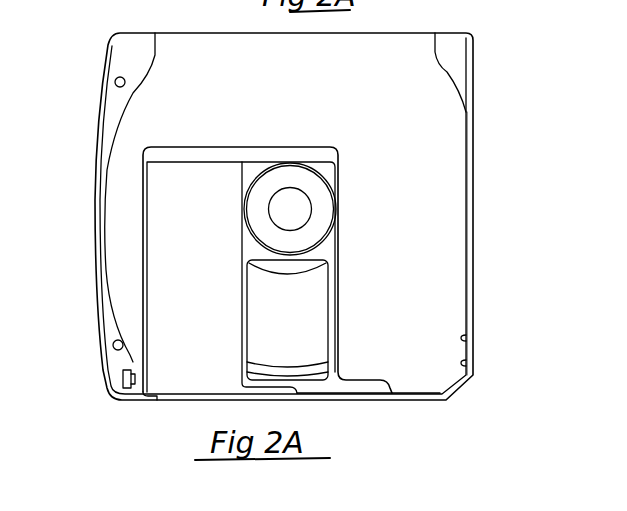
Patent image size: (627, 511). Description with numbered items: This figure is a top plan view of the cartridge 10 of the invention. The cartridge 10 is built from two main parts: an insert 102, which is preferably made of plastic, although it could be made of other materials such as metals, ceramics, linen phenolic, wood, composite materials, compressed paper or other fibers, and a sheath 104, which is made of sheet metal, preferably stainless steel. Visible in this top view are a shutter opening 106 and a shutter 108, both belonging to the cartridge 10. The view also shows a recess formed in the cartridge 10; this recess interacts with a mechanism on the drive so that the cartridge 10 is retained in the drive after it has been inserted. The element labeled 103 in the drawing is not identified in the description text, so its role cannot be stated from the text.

The cartridge 10 is at (508, 112).
The insert 102 is at (462, 56).
The switch / connector 103 is at (123, 378).
The sheath 104 is at (455, 268).
The shutter opening 106 is at (310, 305).
The shutter 108 is at (212, 187).